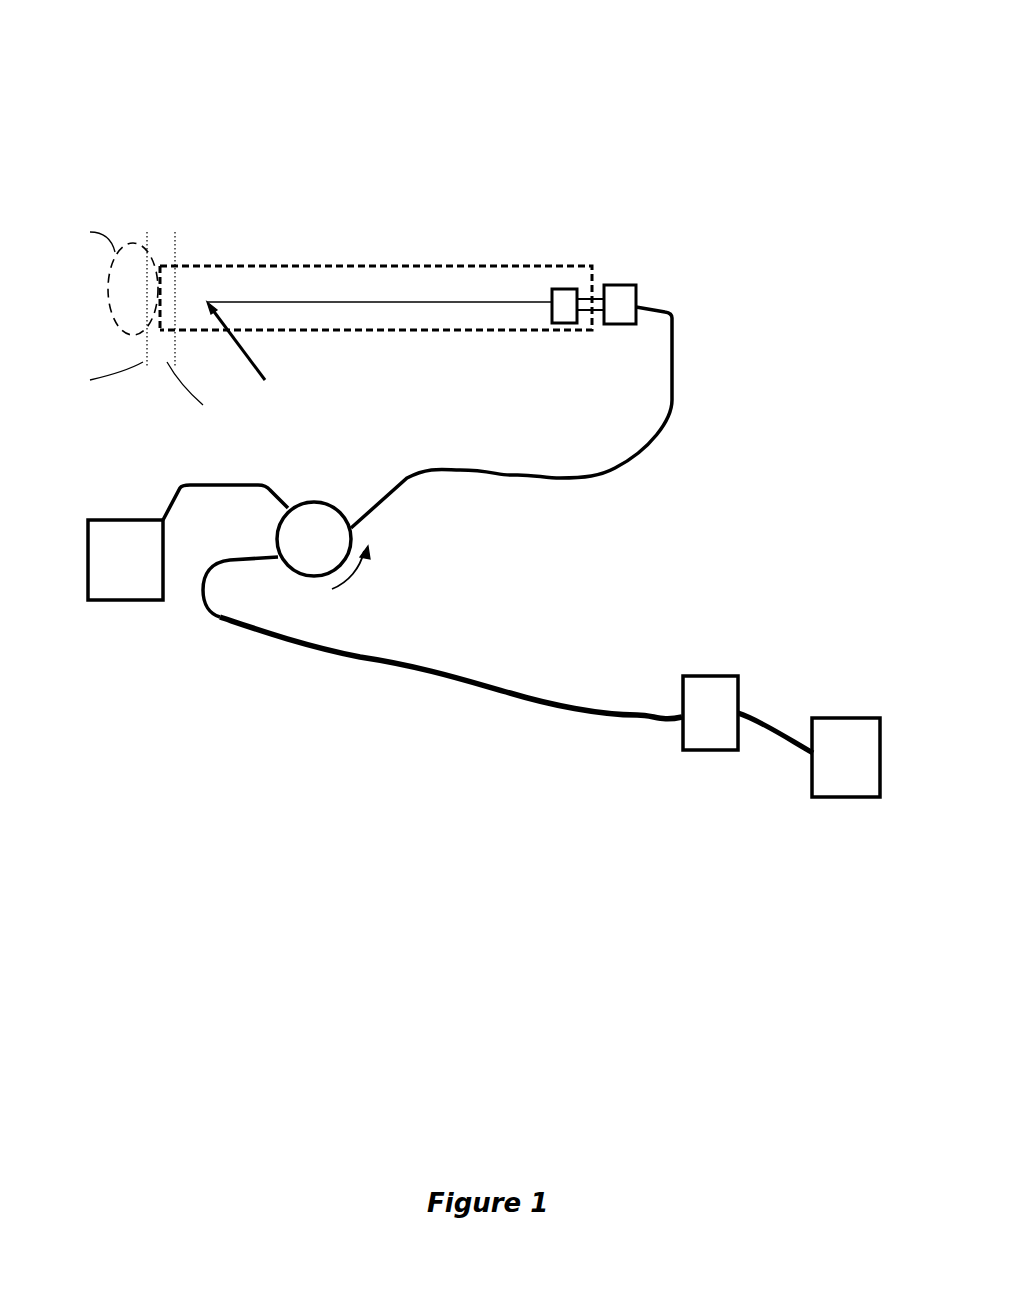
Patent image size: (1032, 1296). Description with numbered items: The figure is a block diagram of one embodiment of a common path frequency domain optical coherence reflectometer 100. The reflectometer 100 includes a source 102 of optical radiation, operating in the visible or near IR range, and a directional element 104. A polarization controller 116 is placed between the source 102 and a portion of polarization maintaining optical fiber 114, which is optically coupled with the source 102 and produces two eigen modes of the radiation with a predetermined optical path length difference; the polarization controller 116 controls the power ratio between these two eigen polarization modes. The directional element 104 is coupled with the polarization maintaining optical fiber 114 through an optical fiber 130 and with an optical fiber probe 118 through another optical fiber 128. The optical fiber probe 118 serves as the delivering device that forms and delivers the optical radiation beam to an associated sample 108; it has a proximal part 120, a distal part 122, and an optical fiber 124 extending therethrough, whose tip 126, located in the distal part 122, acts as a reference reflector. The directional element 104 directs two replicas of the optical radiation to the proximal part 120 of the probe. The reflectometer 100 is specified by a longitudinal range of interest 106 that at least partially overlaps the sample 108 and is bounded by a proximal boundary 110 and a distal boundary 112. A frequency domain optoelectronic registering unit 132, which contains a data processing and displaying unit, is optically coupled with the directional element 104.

The common path frequency domain optical coherence reflectometer 100 is at (738, 123).
The source of optical radiation 102 is at (850, 805).
The directional element 104 is at (332, 500).
The longitudinal range of interest 106 is at (205, 398).
The sample 108 is at (103, 267).
The proximal boundary 110 is at (175, 232).
The distal boundary 112 is at (96, 327).
The polarization maintaining optical fiber 114 is at (517, 658).
The polarization controller 116 is at (718, 640).
The optical fiber probe 118 is at (385, 252).
The proximal part 120 is at (535, 290).
The distal part 122 is at (203, 267).
The optical fiber 124 is at (293, 290).
The tip 126 is at (260, 356).
The optical fiber 128 is at (682, 362).
The optical fiber 130 is at (242, 638).
The frequency domain optoelectronic registering unit 132 is at (125, 620).